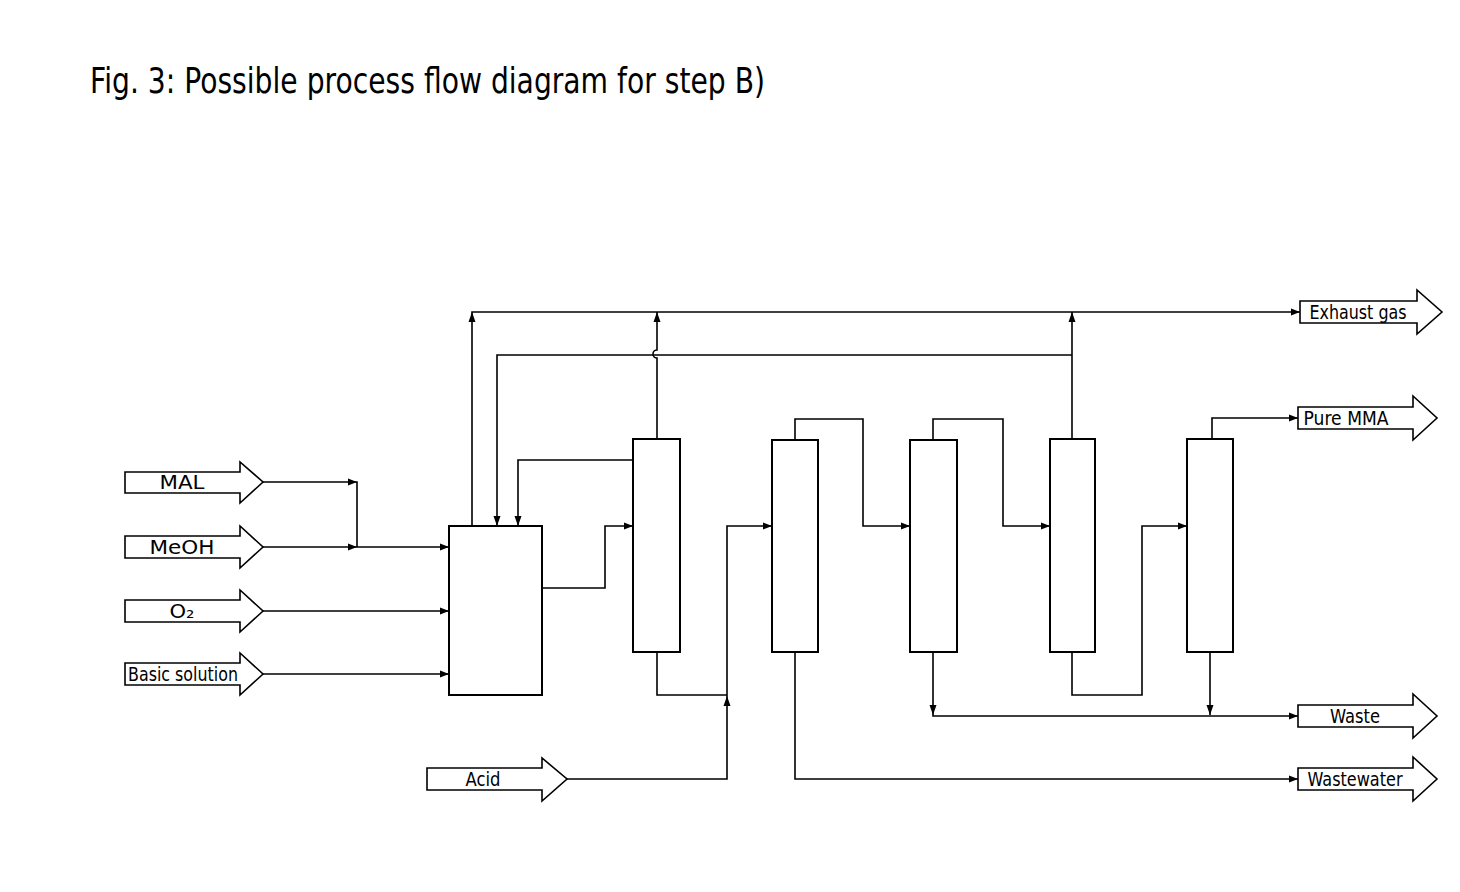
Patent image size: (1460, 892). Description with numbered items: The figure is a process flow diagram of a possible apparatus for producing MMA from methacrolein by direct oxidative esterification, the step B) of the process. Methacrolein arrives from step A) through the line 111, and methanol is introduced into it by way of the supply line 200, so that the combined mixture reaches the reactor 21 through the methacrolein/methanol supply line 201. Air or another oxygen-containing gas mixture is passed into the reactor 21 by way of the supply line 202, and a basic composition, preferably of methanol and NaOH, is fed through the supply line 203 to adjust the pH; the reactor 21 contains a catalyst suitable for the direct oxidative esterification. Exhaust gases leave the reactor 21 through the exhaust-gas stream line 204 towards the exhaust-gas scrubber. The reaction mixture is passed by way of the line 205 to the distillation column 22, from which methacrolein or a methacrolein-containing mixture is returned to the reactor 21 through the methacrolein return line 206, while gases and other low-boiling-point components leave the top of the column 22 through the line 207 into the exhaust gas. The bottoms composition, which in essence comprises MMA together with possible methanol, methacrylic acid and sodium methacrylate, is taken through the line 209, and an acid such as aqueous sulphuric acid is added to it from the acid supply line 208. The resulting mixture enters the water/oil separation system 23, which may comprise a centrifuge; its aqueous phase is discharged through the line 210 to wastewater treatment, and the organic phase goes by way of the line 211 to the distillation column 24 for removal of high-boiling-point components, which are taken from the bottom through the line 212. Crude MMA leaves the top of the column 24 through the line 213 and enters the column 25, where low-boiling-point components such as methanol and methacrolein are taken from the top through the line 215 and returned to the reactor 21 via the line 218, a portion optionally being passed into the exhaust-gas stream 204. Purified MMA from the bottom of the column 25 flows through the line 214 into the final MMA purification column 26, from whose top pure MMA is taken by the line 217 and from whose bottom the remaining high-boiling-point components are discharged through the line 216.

The reactor 21 is at (495, 610).
The distillation column 22 is at (656, 545).
The water/oil separation system 23 is at (795, 546).
The distillation column 24 is at (933, 546).
The column 25 is at (1072, 545).
The final column for MMA purification 26 is at (1210, 545).
The line 111 is at (310, 501).
The supply line 200 is at (310, 534).
The MAL/methanol supply line 201 is at (403, 534).
The supply line 202 is at (356, 599).
The supply line 203 is at (356, 661).
The line 204 is at (864, 418).
The line 205 is at (587, 556).
The line 206 is at (574, 479).
The line 207 is at (677, 375).
The supply line 208 is at (669, 651).
The line 209 is at (692, 673).
The line 210 is at (1046, 717).
The line 211 is at (852, 460).
The line 212 is at (1114, 686).
The line 213 is at (991, 460).
The line 214 is at (1129, 609).
The line 215 is at (1093, 375).
The line 216 is at (1232, 683).
The line 217 is at (1255, 415).
The line 218 is at (783, 427).